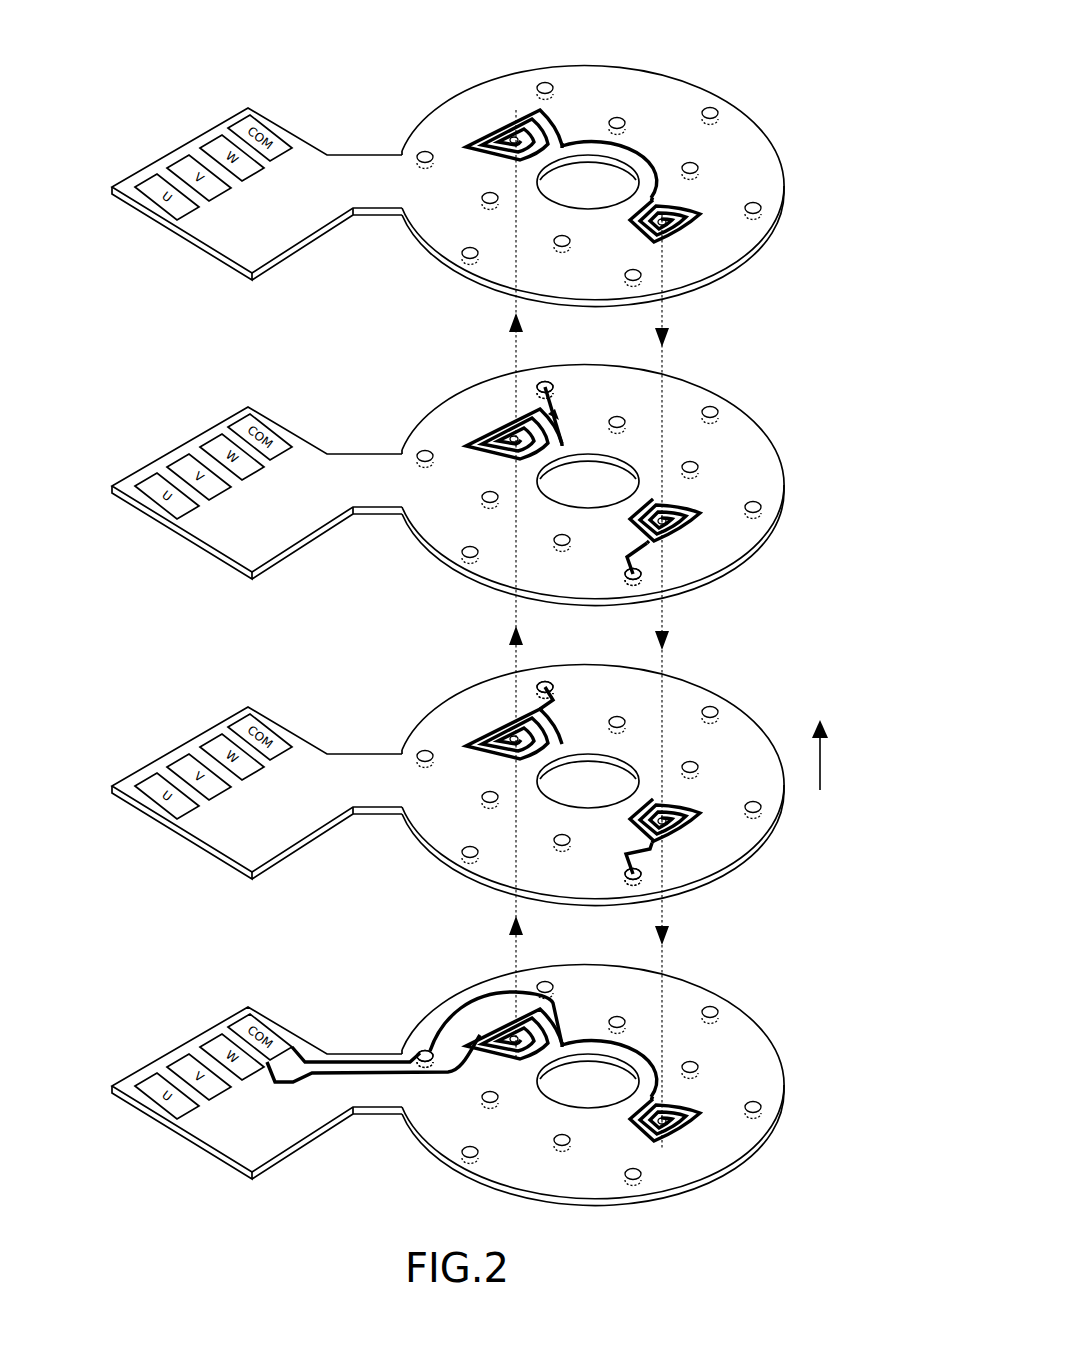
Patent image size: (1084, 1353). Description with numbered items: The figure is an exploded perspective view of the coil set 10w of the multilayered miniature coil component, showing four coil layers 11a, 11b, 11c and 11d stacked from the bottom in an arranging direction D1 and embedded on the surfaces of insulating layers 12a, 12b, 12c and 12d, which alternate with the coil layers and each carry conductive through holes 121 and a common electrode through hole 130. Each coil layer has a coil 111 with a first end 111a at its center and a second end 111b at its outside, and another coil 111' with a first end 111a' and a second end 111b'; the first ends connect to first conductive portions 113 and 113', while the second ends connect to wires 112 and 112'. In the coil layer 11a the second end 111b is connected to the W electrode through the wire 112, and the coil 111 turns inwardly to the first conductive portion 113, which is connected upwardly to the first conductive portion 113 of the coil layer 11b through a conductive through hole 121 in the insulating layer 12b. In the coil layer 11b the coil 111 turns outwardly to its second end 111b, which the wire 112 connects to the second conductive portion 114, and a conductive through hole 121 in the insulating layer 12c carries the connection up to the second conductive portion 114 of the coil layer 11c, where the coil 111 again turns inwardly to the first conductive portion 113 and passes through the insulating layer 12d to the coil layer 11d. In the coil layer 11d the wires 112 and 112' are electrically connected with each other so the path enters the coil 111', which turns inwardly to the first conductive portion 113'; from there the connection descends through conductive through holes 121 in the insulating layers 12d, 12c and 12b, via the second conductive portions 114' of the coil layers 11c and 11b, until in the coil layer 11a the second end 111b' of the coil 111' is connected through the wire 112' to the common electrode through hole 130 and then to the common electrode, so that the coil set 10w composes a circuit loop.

The coil set 10w is at (806, 36).
The first coil layer 11a is at (562, 1059).
The second coil layer 11b is at (555, 761).
The third coil layer 11c is at (557, 461).
The fourth coil layer 11d is at (556, 167).
The insulating layer 12a is at (305, 1045).
The insulating layer 12b is at (313, 752).
The insulating layer 12c is at (318, 450).
The insulating layer 12d is at (330, 160).
The coil 111 is at (461, 592).
The coil 111' is at (730, 692).
The first end 111a is at (481, 540).
The second end 111b is at (534, 525).
The first end 111a' is at (721, 729).
The second end 111b' is at (708, 697).
The wire 112 is at (474, 595).
The wire 112' is at (651, 574).
The first conductive portion 113 is at (518, 583).
The first conductive portion 113' is at (686, 711).
The second conductive portion 114 is at (565, 508).
The second conductive portion 114' is at (599, 750).
The conductive through hole 121 is at (508, 148).
The common electrode through hole 130 is at (422, 1048).
The arranging direction D1 is at (819, 769).